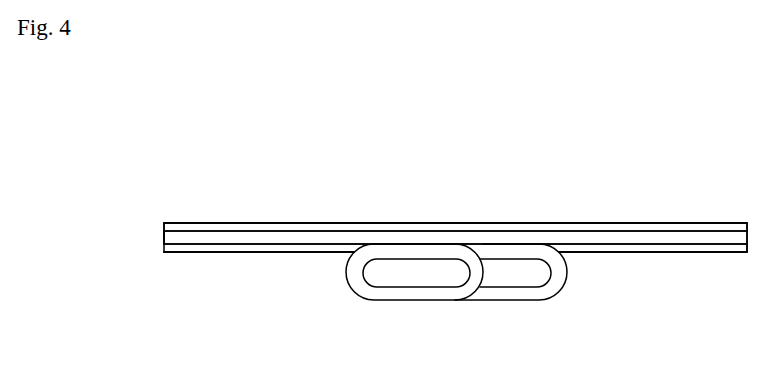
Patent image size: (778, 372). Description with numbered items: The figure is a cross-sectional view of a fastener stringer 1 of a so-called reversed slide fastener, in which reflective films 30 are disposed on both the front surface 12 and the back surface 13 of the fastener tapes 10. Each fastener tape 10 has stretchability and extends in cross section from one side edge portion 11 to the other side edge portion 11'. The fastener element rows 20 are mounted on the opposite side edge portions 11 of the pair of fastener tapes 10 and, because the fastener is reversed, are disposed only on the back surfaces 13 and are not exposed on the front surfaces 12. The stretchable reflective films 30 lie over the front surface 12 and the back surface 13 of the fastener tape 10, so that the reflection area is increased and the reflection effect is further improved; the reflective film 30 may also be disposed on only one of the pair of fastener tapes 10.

The fastener stringer 1 is at (142, 113).
The fastener tape 10 is at (188, 238).
The side edge portion 11 is at (455, 205).
The other side edge portion 11' is at (128, 213).
The front surface 12 is at (247, 228).
The back surface 13 is at (247, 245).
The fastener element row 20 is at (363, 293).
The reflective film 30 is at (270, 225).